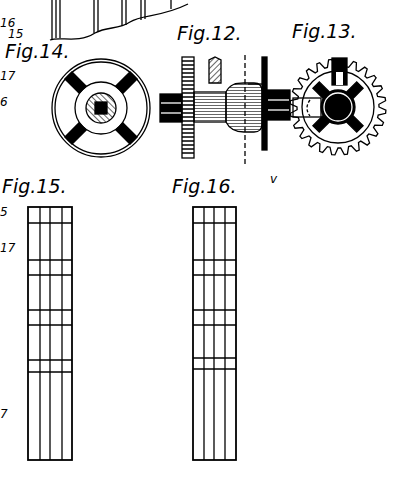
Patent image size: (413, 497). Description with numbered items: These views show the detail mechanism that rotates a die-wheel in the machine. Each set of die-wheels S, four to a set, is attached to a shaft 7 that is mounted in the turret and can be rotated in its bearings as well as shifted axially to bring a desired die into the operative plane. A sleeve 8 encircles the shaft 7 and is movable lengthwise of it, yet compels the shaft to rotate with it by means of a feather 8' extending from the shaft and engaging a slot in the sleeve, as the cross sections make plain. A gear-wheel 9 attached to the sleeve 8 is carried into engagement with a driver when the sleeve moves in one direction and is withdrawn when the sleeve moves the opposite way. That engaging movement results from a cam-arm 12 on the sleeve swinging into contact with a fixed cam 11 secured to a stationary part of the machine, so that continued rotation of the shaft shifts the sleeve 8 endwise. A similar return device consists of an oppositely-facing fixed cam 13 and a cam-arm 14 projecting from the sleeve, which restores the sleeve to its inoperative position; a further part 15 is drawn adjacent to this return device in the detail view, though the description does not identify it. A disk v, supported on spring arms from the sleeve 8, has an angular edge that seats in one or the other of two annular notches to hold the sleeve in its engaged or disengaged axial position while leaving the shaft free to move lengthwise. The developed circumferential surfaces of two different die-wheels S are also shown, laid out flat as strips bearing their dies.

In FIG. 12, the shaft 7 is at (172, 123).
In FIG. 13, the shaft 7 is at (356, 106).
In FIG. 14, the shaft 7 is at (116, 107).
In FIG. 12, the sleeve 8 is at (210, 118).
In FIG. 13, the sleeve 8 is at (338, 130).
In FIG. 14, the sleeve 8 is at (101, 125).
In FIG. 12, the feather 8' is at (281, 90).
In FIG. 13, the feather 8' is at (370, 72).
In FIG. 14, the feather 8' is at (121, 80).
In FIG. 12, the gear-wheel 9 is at (186, 140).
In FIG. 13, the gear-wheel 9 is at (312, 136).
In FIG. 12, the fixed actuating member or cam 11 is at (266, 150).
In FIG. 12, the cam-arm 12 is at (220, 70).
In FIG. 13, the cam-arm 12 is at (347, 62).
In FIG. 12, the fixed actuating member or cam 13 is at (245, 159).
In FIG. 12, the cam-arm 14 is at (232, 128).
In FIG. 13, the cam-arm 14 is at (300, 114).
In FIG. 12, the flange 15 is at (258, 90).
In FIG. 12, the disk v is at (159, 66).
In FIG. 14, the disk v is at (146, 84).
In FIG. 15, the die-wheel S is at (57, 333).
In FIG. 16, the die-wheel S is at (206, 333).